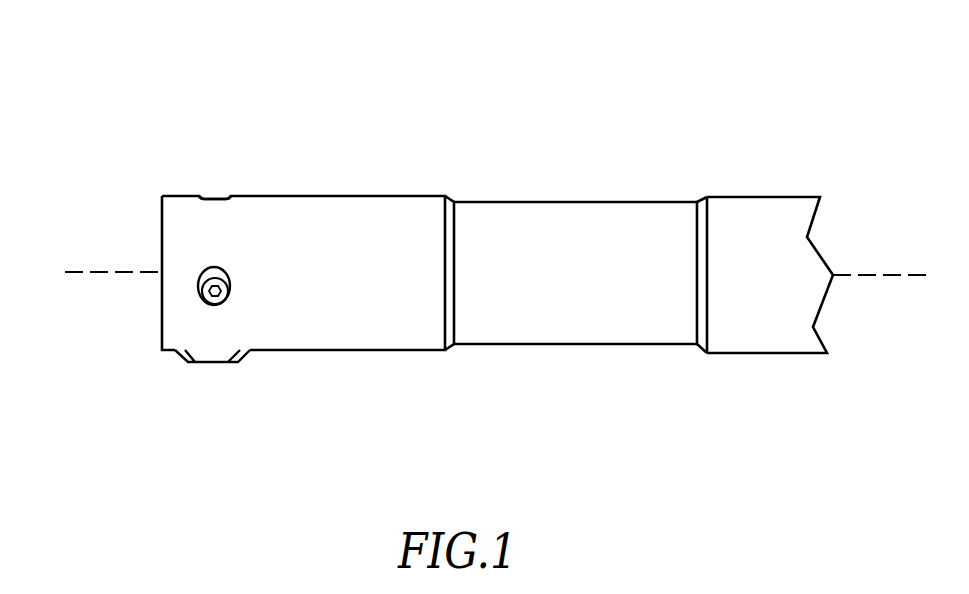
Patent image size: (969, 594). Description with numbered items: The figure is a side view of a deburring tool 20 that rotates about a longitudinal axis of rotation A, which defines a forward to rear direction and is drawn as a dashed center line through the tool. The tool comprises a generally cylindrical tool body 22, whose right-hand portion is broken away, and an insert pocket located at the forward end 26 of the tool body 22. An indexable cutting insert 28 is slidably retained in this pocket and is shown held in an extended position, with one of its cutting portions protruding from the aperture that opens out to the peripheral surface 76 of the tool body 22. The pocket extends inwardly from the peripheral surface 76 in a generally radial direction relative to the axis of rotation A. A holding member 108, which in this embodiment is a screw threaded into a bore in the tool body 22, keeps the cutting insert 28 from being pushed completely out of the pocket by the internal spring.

The deburring tool 20 is at (435, 254).
The tool body 22 is at (642, 300).
The forward end 26 is at (219, 170).
The cutting insert 28 is at (244, 397).
The peripheral surface 76 is at (343, 208).
The holding member 108 is at (200, 290).
The longitudinal axis of rotation A is at (115, 271).